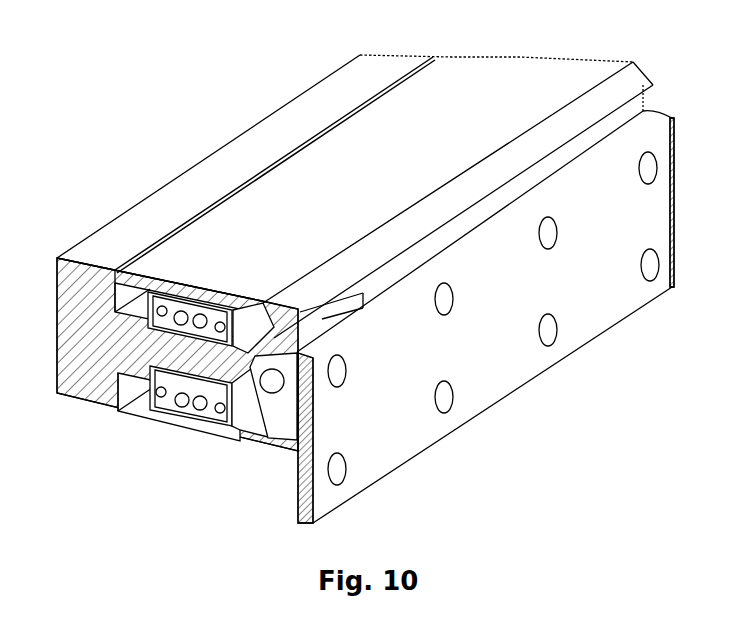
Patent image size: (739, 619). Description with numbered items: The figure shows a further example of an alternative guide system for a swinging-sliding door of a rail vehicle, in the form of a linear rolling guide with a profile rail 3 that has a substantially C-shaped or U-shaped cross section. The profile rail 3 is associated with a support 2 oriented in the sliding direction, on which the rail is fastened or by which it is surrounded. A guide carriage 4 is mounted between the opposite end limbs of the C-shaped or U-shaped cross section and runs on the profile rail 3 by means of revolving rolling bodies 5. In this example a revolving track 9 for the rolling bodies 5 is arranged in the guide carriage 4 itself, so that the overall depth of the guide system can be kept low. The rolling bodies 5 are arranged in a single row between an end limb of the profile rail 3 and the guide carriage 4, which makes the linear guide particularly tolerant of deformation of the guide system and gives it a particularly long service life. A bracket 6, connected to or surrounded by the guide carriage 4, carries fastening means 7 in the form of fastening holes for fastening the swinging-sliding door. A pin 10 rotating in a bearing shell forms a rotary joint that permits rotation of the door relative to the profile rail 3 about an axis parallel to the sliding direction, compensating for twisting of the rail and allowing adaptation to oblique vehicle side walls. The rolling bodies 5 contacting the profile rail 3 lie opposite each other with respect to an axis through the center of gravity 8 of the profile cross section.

The support 2 is at (235, 152).
The profile rail 3 is at (240, 302).
The guide carriage 4 is at (213, 297).
The rolling bodies 5 is at (150, 418).
The bracket 6 is at (251, 442).
The fastening means 7 is at (549, 334).
The center of gravity 8 is at (465, 70).
The revolving track 9 is at (160, 283).
The pin 10 is at (276, 384).